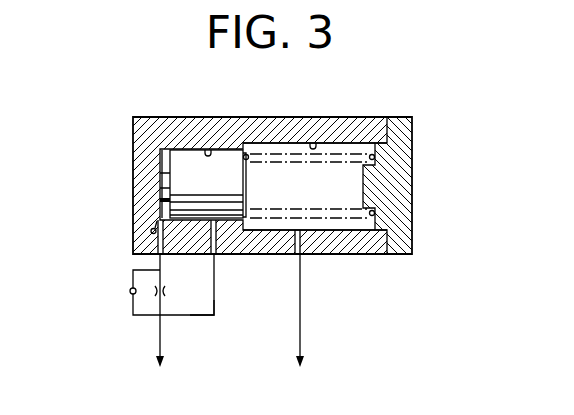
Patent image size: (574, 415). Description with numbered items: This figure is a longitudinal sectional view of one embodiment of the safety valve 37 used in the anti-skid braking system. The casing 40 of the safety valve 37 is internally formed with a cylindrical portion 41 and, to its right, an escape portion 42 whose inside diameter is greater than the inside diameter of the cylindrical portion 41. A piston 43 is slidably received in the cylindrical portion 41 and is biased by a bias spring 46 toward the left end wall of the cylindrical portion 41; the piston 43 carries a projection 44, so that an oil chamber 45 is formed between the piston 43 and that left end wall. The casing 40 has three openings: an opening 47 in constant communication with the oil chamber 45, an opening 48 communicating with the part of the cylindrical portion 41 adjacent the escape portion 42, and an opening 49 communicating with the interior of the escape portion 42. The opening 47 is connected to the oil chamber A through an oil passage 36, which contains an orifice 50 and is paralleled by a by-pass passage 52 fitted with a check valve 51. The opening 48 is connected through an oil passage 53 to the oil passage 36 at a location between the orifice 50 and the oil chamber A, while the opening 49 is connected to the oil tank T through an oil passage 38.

The oil passage 36 is at (160, 345).
The safety valve 37 is at (177, 106).
The oil passage 38 is at (300, 345).
The casing 40 is at (261, 117).
The cylindrical portion 41 is at (208, 150).
The escape portion 42 is at (313, 143).
The piston 43 is at (228, 197).
The projection 44 is at (160, 190).
The oil chamber 45 is at (160, 160).
The bias spring 46 is at (249, 158).
The opening 47 is at (151, 230).
The opening 48 is at (215, 254).
The opening 49 is at (302, 254).
The orifice 50 is at (174, 291).
The check valve 51 is at (130, 291).
The by-pass passage 52 is at (133, 296).
The oil passage 53 is at (214, 315).